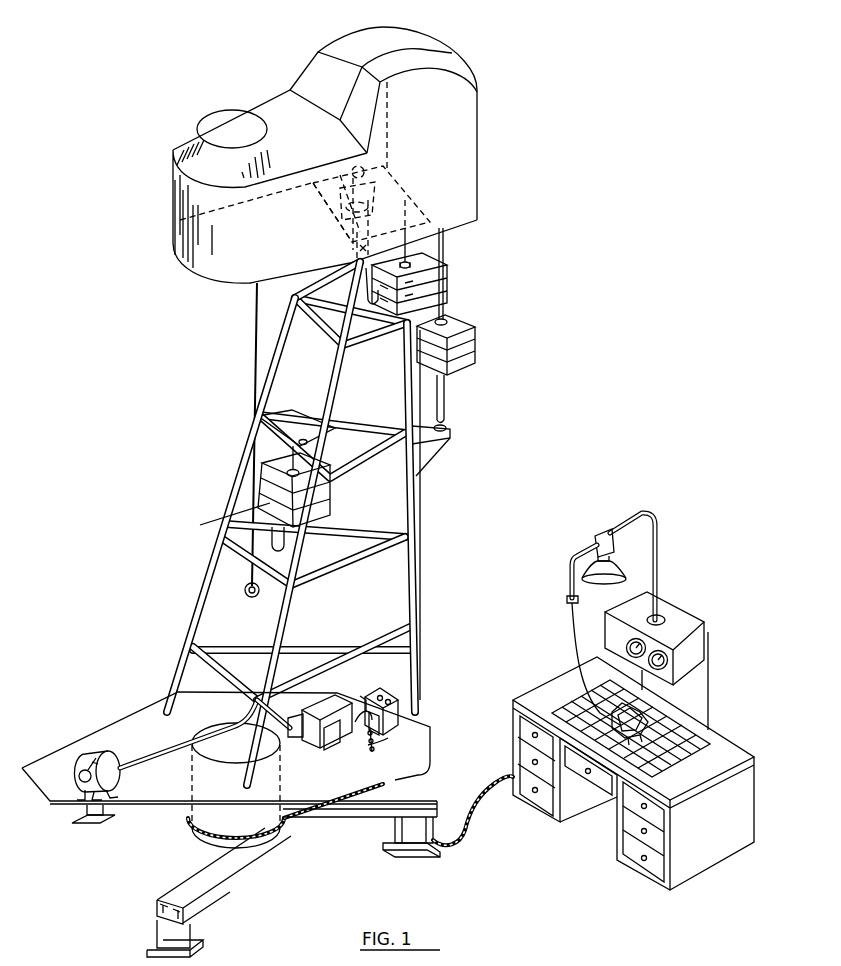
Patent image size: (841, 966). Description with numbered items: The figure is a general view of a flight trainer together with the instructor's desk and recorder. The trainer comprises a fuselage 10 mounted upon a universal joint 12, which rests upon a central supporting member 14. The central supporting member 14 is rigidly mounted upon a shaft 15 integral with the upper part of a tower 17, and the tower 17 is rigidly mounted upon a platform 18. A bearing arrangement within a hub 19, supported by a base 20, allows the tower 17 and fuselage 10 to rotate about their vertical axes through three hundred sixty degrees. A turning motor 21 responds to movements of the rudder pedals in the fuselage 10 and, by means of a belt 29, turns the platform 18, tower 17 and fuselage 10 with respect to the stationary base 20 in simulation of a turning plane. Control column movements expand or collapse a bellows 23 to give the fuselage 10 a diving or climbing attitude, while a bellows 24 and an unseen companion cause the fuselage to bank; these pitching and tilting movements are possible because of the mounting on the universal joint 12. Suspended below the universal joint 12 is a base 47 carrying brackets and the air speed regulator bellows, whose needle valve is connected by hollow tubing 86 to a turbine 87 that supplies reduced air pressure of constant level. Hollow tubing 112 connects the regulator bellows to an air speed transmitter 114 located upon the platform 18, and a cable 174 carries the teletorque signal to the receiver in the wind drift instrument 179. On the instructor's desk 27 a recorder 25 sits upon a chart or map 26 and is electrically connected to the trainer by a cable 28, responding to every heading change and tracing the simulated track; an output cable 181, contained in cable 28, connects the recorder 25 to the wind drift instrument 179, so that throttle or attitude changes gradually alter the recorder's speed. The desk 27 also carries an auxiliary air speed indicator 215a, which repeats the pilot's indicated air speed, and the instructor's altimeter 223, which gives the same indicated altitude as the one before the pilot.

The fuselage 10 is at (222, 268).
The universal joint 12 is at (390, 177).
The central supporting member 14 is at (377, 183).
The shaft 15 is at (357, 248).
The tower 17 is at (417, 557).
The platform 18 is at (110, 733).
The hub 19 is at (200, 813).
The base 20 is at (193, 867).
The turning motor 21 is at (385, 777).
The bellows 23 is at (475, 348).
The bellows 24 is at (440, 275).
The recorder 25 is at (640, 713).
The chart or map 26 is at (690, 727).
The desk 27 is at (718, 752).
The cable 28 is at (477, 820).
The belt 29 is at (293, 823).
The base 47 is at (430, 222).
The hollow tubing 86 is at (150, 757).
The turbine 87 is at (88, 758).
The hollow tubing 112 is at (397, 717).
The air speed transmitter 114 is at (399, 697).
The cable 174 is at (360, 713).
The wind drift instrument 179 is at (308, 742).
The output cable 181 is at (368, 747).
The auxiliary air speed indicator 215a is at (667, 661).
The altimeter 223 is at (680, 620).